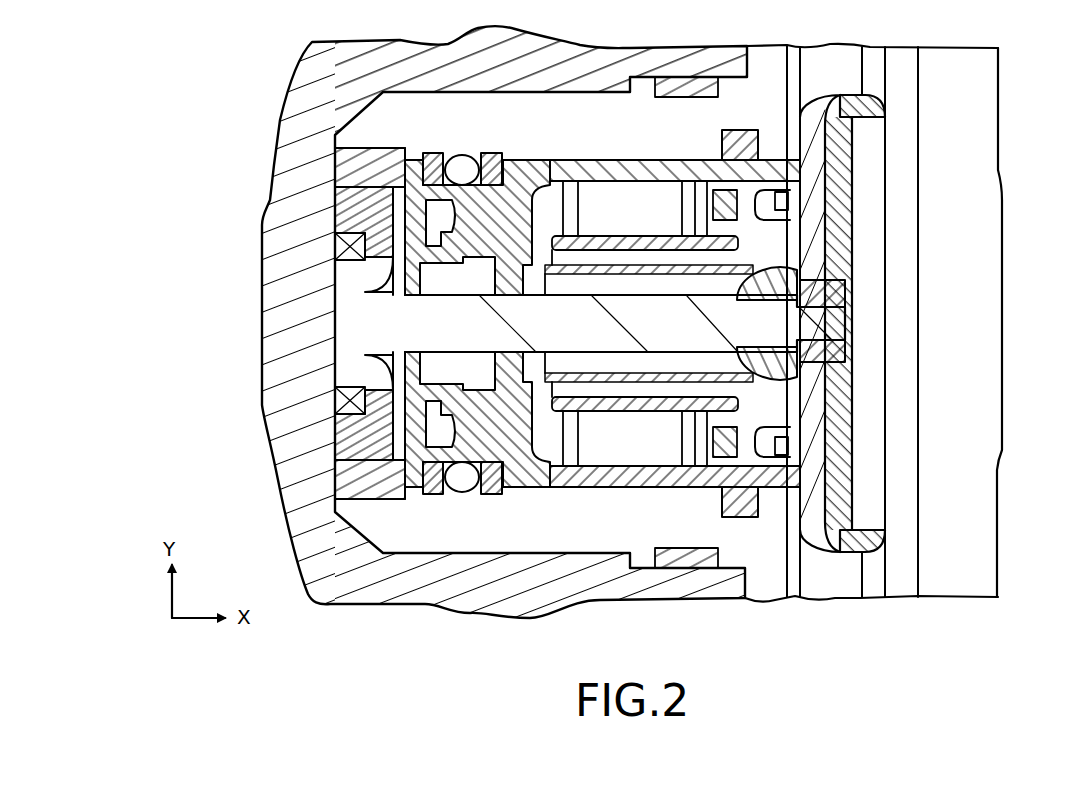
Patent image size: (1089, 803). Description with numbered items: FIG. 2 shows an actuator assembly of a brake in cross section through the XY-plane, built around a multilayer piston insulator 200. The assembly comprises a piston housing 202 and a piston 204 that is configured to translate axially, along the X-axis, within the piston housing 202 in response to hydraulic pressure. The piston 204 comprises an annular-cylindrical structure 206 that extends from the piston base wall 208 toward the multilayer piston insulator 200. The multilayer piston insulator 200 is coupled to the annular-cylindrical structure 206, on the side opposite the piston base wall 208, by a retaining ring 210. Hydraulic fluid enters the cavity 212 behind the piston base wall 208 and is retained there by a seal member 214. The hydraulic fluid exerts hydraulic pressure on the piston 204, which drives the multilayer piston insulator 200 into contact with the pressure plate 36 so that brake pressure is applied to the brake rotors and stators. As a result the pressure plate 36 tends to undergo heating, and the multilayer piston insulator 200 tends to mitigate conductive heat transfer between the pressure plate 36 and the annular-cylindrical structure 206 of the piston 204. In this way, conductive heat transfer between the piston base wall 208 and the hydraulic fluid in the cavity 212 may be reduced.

The multilayer piston insulator 200 is at (880, 85).
The piston housing 202 is at (510, 538).
The piston 204 is at (647, 502).
The annular-cylindrical structure 206 is at (587, 478).
The piston base wall 208 is at (450, 437).
The retaining ring 210 is at (778, 442).
The cavity 212 is at (373, 272).
The seal member 214 is at (465, 480).
The pressure plate 36 is at (960, 322).